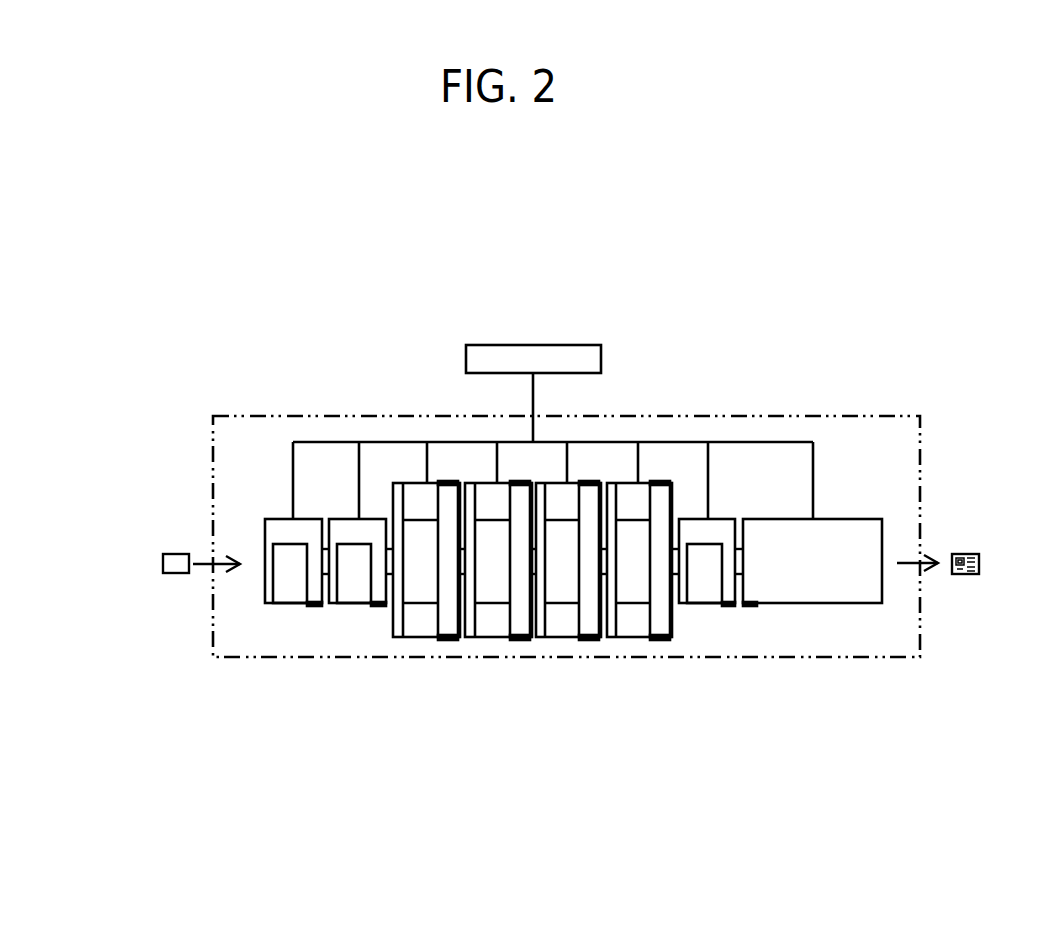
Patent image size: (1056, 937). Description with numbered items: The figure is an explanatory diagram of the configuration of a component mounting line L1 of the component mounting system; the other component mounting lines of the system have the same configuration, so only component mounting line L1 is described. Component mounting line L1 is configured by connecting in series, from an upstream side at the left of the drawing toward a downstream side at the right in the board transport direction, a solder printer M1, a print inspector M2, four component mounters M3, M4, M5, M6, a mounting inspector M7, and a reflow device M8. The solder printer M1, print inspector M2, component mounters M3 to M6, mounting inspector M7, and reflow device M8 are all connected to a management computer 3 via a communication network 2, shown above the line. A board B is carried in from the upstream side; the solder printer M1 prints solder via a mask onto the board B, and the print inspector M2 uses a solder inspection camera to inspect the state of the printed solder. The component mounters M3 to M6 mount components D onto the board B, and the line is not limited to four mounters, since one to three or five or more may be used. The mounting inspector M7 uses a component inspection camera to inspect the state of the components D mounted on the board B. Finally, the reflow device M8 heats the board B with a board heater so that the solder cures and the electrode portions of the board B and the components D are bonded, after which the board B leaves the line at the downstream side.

The communication network 2 is at (767, 440).
The management computer 3 is at (601, 361).
The component mounting line L1 is at (882, 415).
The board B is at (176, 554).
The component D is at (965, 565).
The solder printer M1 is at (291, 706).
The print inspector M2 is at (359, 706).
The component mounter M3 is at (427, 706).
The component mounter M4 is at (497, 706).
The component mounter M5 is at (568, 706).
The component mounter M6 is at (638, 706).
The mounting inspector M7 is at (706, 706).
The reflow device M8 is at (812, 706).